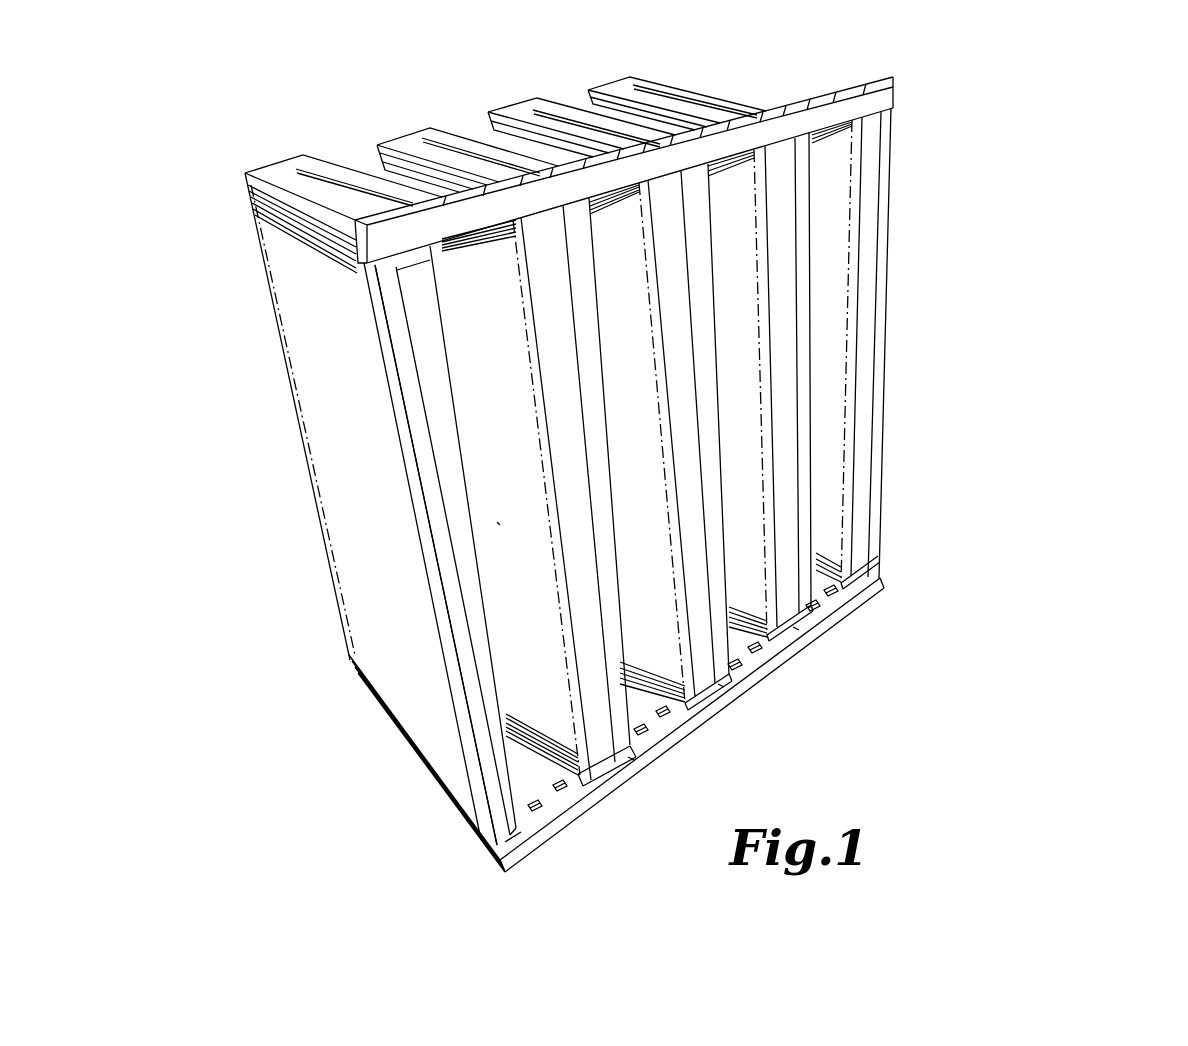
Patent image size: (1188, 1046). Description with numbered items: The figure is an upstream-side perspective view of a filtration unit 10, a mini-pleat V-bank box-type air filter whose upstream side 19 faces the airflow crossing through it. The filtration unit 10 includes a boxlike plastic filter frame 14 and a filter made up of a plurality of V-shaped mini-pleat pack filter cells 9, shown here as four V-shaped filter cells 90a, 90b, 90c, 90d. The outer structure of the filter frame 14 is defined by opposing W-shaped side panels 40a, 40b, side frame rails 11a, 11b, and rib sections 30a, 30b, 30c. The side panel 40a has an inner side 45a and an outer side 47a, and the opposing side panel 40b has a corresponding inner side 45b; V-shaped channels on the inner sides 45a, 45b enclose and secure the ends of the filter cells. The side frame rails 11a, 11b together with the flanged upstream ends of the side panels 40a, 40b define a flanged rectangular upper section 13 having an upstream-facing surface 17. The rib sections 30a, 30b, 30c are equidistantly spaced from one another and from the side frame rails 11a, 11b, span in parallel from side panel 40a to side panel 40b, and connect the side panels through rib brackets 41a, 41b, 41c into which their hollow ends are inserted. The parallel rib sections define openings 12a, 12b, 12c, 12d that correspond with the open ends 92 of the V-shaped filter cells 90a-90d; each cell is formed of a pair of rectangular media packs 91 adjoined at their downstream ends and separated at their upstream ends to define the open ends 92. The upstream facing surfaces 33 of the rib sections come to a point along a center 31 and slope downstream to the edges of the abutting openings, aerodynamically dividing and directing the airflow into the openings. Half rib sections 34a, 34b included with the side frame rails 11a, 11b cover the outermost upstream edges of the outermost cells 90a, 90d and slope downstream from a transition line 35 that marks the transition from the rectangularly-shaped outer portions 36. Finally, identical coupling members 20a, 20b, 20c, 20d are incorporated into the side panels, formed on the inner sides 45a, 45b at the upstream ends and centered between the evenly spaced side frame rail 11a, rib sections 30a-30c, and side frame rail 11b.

The filtration unit 10 is at (1068, 176).
The flanged rectangular upper section 13 is at (890, 55).
The upstream-facing surface 17 is at (897, 94).
The upstream side 19 is at (833, 700).
The filter 9 is at (305, 415).
The side frame rail 11a is at (398, 343).
The side frame rail 11b is at (870, 409).
The opening 12a is at (512, 452).
The opening 12b is at (644, 403).
The opening 12c is at (755, 378).
The opening 12d is at (838, 236).
The filter frame 14 is at (447, 657).
The coupling member 20a is at (553, 803).
The coupling member 20b is at (665, 722).
The coupling member 20c is at (755, 655).
The coupling member 20d is at (830, 597).
The rib section 30a is at (530, 352).
The rib section 30b is at (665, 294).
The rib section 30c is at (772, 283).
The center 31 is at (588, 432).
The upstream facing surface 33 is at (555, 487).
The half rib section 34a is at (443, 462).
The half rib section 34b is at (863, 298).
The transition line 35 is at (486, 598).
The rectangularly-shaped outer portion 36 is at (402, 387).
The side panel 40a is at (372, 240).
The side panel 40b is at (513, 857).
The rib bracket 41a is at (630, 758).
The rib bracket 41b is at (720, 685).
The rib bracket 41c is at (795, 628).
The inner side 45a is at (437, 245).
The inner side 45b is at (818, 580).
The outer side 47a is at (257, 170).
The V-shaped filter cell 90a is at (515, 615).
The V-shaped filter cell 90b is at (637, 557).
The V-shaped filter cell 90c is at (747, 495).
The V-shaped filter cell 90d is at (828, 447).
The media pack 91 is at (497, 522).
The open end 92 is at (597, 247).